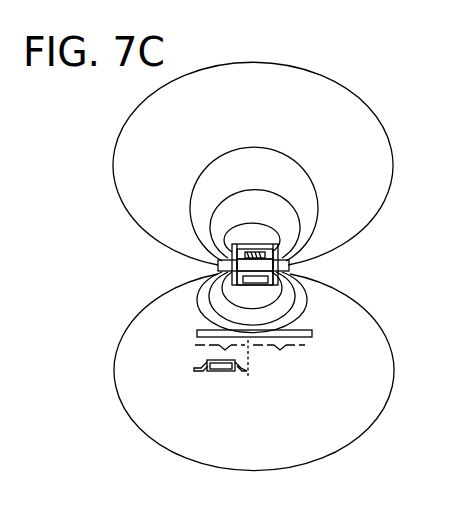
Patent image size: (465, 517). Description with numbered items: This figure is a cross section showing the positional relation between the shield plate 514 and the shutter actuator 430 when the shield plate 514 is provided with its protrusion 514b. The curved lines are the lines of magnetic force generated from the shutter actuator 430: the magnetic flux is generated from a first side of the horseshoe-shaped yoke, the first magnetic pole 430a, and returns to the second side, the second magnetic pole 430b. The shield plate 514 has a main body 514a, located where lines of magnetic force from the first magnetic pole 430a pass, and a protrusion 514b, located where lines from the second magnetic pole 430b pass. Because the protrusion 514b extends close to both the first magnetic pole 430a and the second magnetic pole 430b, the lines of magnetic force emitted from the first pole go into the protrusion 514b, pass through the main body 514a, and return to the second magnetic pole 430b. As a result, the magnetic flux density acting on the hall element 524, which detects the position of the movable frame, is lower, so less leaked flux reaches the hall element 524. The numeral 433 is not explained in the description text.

The shutter actuator 430 is at (253, 157).
The first magnetic pole 430a is at (218, 266).
The second magnetic pole 430b is at (258, 249).
The magnetic field lines 433 is at (289, 270).
The shield plate 514 is at (199, 330).
The main body 514a is at (197, 348).
The protrusion 514b is at (280, 361).
The hall element 524 is at (197, 369).